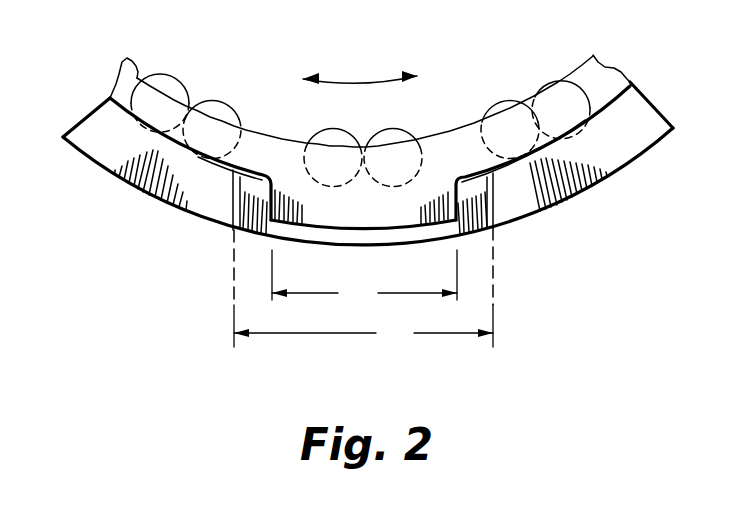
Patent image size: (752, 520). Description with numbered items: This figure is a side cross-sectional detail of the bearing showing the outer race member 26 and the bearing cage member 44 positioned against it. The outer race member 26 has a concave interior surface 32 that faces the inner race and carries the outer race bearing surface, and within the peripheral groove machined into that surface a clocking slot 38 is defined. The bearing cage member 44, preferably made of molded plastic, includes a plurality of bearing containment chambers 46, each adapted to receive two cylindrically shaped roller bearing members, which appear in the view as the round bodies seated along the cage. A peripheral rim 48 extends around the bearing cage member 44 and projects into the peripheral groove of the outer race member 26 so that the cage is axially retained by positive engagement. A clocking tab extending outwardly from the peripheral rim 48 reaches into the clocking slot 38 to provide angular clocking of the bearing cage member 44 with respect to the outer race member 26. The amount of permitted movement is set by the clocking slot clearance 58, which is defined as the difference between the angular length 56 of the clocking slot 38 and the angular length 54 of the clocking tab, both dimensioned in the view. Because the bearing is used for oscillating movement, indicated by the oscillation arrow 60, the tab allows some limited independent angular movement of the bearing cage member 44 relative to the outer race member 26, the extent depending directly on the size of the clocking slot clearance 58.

The outer race member 26 is at (628, 168).
The concave interior surface 32 is at (248, 165).
The clocking slot 38 is at (248, 184).
The bearing cage member 44 is at (450, 132).
The bearing containment chambers 46 is at (194, 106).
The peripheral rim 48 is at (138, 73).
The angular length of the clocking tab 54 is at (364, 281).
The angular length of the clocking slot 56 is at (363, 329).
The clocking slot clearance 58 is at (233, 224).
The oscillation arrow 60 is at (365, 80).